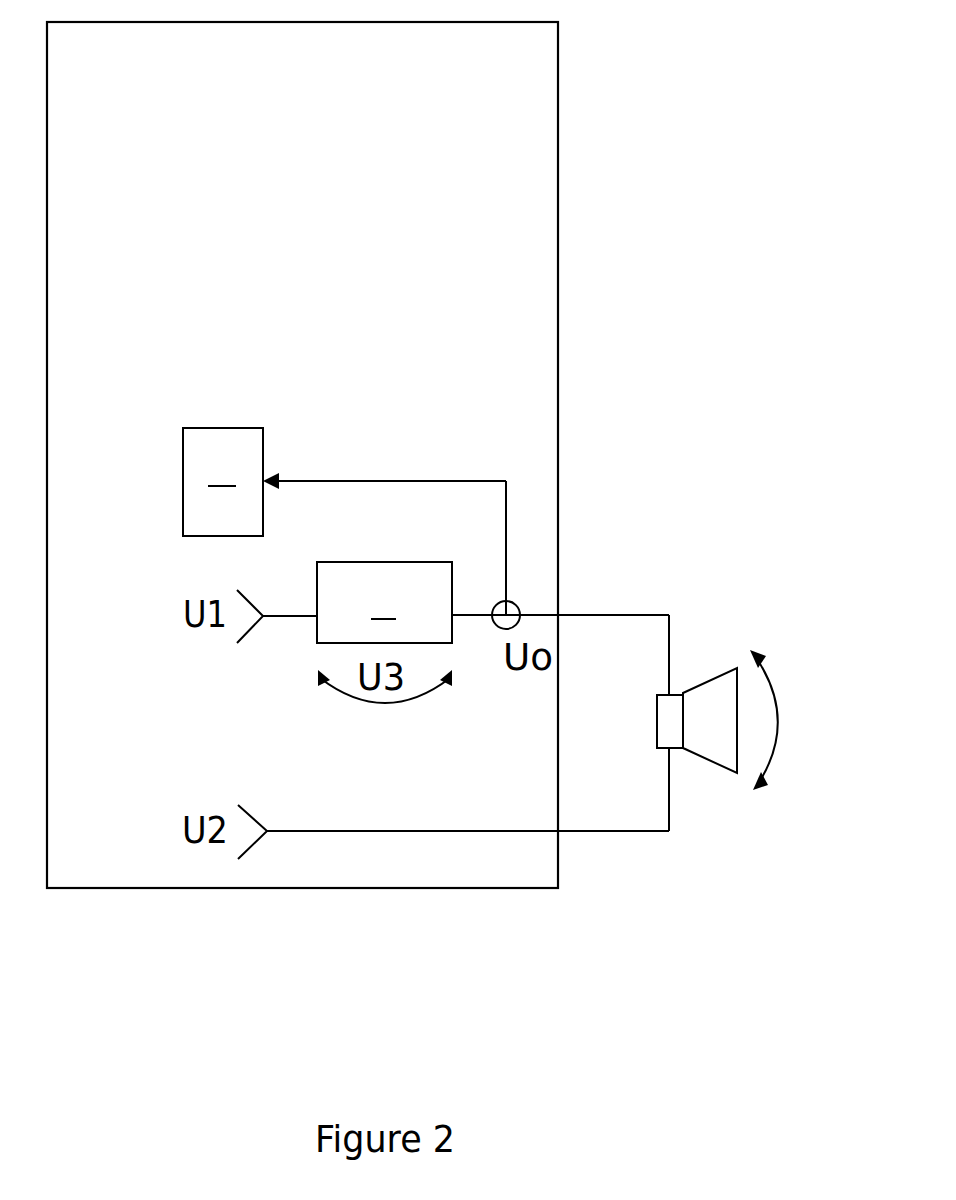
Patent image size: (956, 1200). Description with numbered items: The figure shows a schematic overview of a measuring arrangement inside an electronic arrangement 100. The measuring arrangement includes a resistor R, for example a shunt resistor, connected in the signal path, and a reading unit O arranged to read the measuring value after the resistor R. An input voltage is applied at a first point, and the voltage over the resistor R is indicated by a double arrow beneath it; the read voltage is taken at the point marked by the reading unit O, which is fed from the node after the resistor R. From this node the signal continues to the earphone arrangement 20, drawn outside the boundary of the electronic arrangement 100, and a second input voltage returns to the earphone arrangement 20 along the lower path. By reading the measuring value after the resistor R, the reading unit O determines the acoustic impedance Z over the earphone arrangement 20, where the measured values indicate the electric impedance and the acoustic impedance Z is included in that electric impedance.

The electronic arrangement 100 is at (530, 210).
The earphone arrangement 20 is at (697, 747).
The resistor R is at (384, 602).
The reading unit O is at (223, 482).
The acoustic impedance Z is at (787, 720).